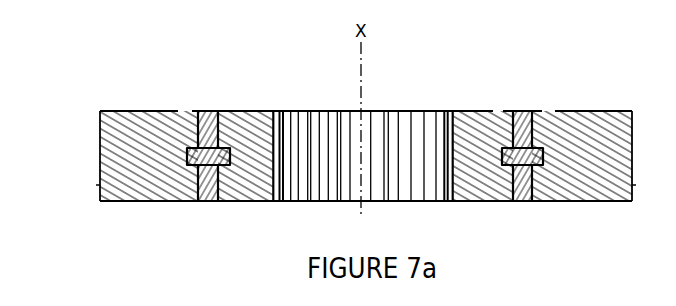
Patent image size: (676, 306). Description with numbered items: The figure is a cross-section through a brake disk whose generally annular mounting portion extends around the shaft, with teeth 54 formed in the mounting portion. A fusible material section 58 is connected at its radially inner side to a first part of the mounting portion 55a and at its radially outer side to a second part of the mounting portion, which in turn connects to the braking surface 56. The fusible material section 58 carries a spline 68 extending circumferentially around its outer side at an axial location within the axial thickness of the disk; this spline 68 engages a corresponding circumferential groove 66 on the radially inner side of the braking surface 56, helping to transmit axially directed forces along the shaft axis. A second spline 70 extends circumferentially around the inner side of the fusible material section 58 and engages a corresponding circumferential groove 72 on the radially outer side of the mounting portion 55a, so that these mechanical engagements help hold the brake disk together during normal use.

The teeth 54 is at (392, 133).
The first part of the mounting portion 55a is at (245, 133).
The braking surface 56 is at (583, 137).
The fusible material section 58 is at (522, 115).
The circumferential groove 66 is at (187, 157).
The spline 68 is at (542, 165).
The second spline 70 is at (507, 148).
The circumferential groove 72 is at (228, 167).